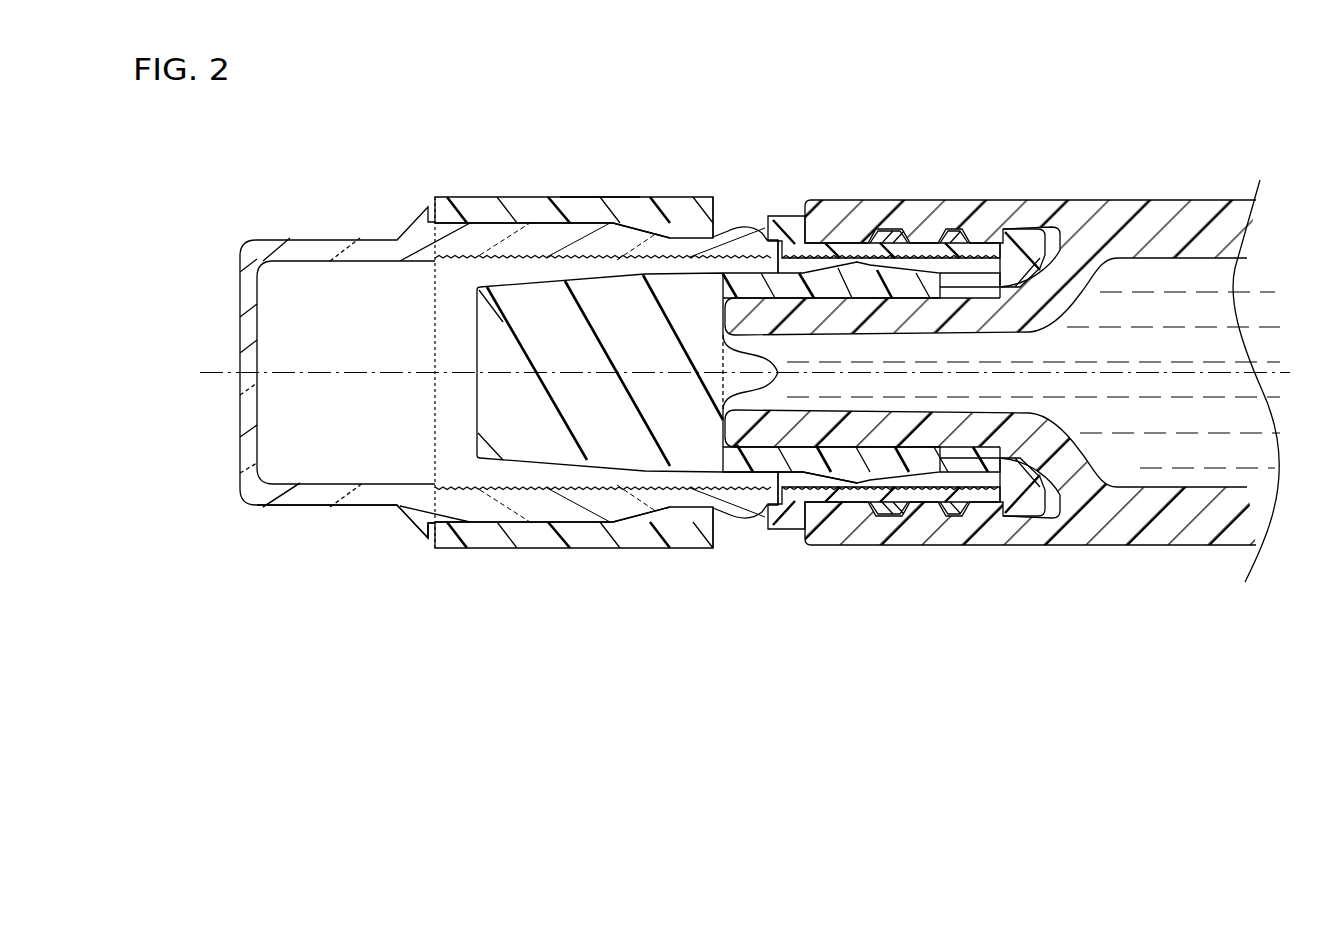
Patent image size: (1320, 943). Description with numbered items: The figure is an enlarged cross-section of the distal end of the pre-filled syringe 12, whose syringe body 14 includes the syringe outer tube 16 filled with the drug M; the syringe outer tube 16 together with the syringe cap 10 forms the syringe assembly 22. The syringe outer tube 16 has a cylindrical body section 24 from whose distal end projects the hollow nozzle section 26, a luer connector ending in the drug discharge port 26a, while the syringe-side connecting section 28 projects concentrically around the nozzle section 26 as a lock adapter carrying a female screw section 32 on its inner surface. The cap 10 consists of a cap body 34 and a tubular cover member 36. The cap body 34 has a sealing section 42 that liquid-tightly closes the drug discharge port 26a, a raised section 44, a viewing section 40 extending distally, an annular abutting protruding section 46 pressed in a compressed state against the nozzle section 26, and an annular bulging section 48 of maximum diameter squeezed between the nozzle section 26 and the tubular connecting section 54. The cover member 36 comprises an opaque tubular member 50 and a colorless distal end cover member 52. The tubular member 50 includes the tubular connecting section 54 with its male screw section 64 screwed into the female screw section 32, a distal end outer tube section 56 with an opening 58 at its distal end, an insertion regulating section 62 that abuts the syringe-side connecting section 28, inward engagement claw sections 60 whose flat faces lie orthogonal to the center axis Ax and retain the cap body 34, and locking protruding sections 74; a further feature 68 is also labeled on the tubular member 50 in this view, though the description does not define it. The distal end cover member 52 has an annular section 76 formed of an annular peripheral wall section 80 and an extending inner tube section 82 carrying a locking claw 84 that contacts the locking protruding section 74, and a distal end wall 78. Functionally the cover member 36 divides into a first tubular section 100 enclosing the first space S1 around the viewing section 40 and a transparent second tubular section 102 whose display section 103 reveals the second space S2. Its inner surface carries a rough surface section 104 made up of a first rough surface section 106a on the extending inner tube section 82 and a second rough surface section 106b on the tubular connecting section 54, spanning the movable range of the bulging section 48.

The syringe cap 10 is at (706, 185).
The pre-filled syringe 12 is at (344, 114).
The syringe body 14 is at (1036, 197).
The syringe outer tube 16 is at (828, 192).
The syringe assembly 22 is at (818, 128).
The body section 24 is at (1171, 228).
The nozzle section 26 is at (860, 312).
The drug discharge port 26a is at (723, 362).
The syringe-side connecting section 28 is at (953, 229).
The female screw section 32 is at (893, 229).
The cap body 34 is at (522, 465).
The cover member 36 is at (560, 133).
The viewing section 40 is at (570, 457).
The sealing section 42 is at (708, 320).
The raised section 44 is at (757, 366).
The abutting protruding section 46 is at (920, 290).
The bulging section 48 is at (888, 516).
The tubular member 50 is at (565, 194).
The distal end cover member 52 is at (483, 218).
The tubular connecting section 54 is at (950, 517).
The distal end outer tube section 56 is at (622, 212).
The opening 58 is at (435, 349).
The engagement claw section 60 is at (1015, 500).
The insertion regulating section 62 is at (800, 492).
The male screw section 64 is at (967, 515).
The end portion 68 is at (704, 530).
The locking protruding section 74 is at (690, 205).
The annular section 76 is at (435, 620).
The distal end wall 78 is at (250, 340).
The annular peripheral wall section 80 is at (375, 497).
The extending inner tube section 82 is at (430, 522).
The locking claw 84 is at (745, 500).
The first tubular section 100 is at (592, 194).
The second tubular section 102 is at (314, 230).
The display section 103 is at (331, 549).
The rough surface section 104 is at (800, 657).
The first rough surface section 106a is at (641, 548).
The second rough surface section 106b is at (840, 546).
The center axis Ax is at (729, 372).
The drug M is at (1212, 280).
The first space S1 is at (614, 486).
The second space S2 is at (304, 458).